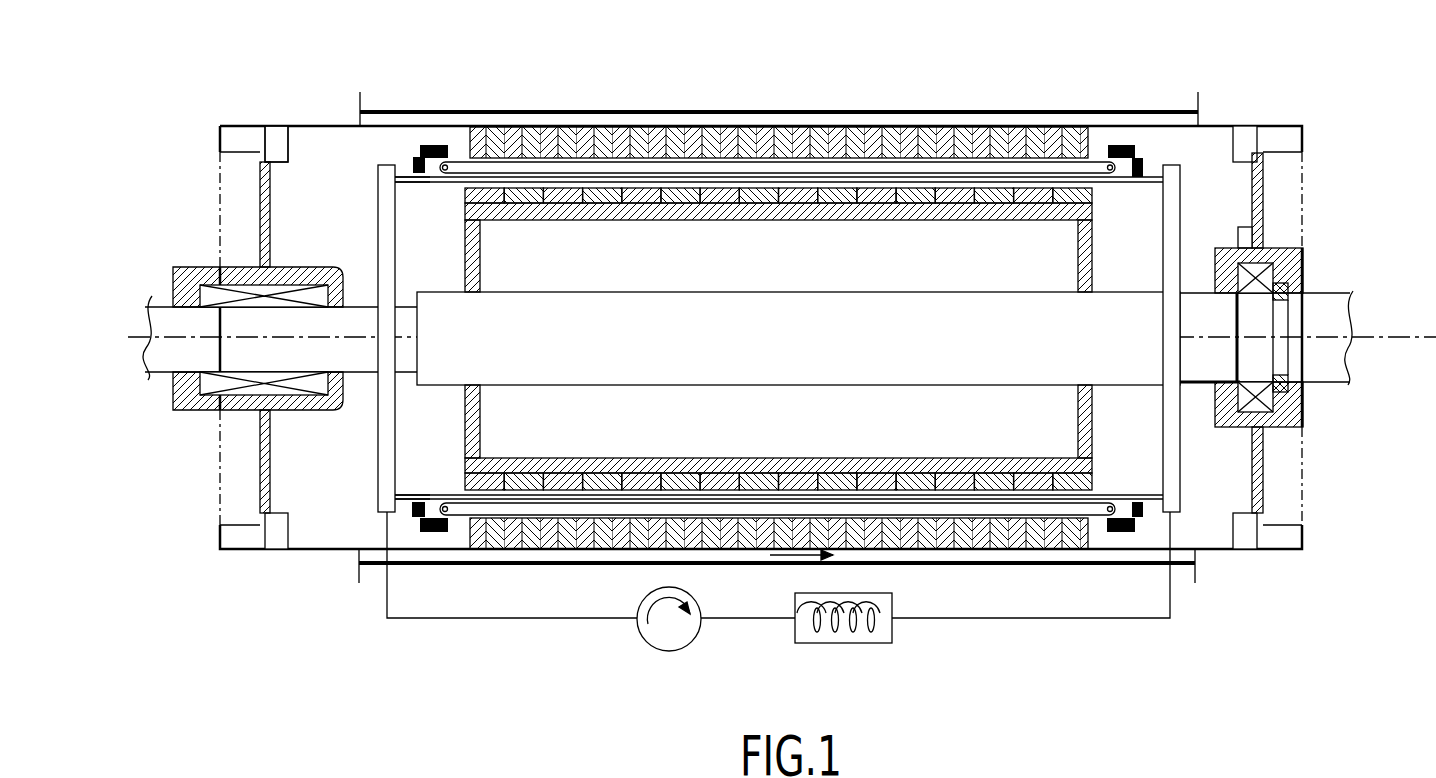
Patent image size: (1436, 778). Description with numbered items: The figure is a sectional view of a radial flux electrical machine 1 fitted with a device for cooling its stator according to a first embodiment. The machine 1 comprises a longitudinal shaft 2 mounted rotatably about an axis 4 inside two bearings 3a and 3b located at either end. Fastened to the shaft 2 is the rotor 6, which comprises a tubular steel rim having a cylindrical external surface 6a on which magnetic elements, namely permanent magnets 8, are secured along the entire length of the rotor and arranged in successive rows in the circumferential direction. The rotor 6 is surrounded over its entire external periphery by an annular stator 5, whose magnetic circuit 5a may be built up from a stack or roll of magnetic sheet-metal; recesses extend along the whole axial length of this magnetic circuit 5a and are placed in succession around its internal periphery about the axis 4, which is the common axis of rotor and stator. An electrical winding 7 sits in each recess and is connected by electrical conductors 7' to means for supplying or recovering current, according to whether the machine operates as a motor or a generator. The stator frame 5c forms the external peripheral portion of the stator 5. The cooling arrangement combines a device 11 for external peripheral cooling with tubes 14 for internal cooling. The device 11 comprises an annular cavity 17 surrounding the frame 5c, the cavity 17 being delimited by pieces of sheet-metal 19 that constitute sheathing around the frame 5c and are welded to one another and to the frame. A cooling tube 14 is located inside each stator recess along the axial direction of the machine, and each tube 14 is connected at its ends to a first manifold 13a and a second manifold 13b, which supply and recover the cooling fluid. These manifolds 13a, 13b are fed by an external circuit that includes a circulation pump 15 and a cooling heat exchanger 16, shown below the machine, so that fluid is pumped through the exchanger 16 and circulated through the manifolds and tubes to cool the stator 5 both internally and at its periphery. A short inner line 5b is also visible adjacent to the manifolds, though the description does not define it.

The radial flux machine 1 is at (160, 478).
The longitudinal shaft 2 is at (1125, 318).
The bearing 3a is at (208, 297).
The bearing 3b is at (1268, 275).
The axis 4 is at (1410, 340).
The annular stator 5 is at (795, 127).
The magnetic circuit 5a is at (748, 127).
The inner housing wall 5b is at (668, 180).
The frame 5c is at (325, 125).
The rotor 6 is at (778, 394).
The cylindrical external surface 6a is at (963, 465).
The electrical winding 7 is at (777, 282).
The electrical conductors 7' is at (777, 290).
The permanent magnets 8 is at (638, 483).
The device for external peripheral cooling 11 is at (778, 379).
The first manifold 13a is at (378, 455).
The second manifold 13b is at (1167, 468).
The cooling tube 14 is at (402, 180).
The circulation pump 15 is at (677, 637).
The cooling heat exchanger 16 is at (853, 643).
The annular cavity 17 is at (873, 120).
The pieces of sheet-metal 19 is at (622, 110).